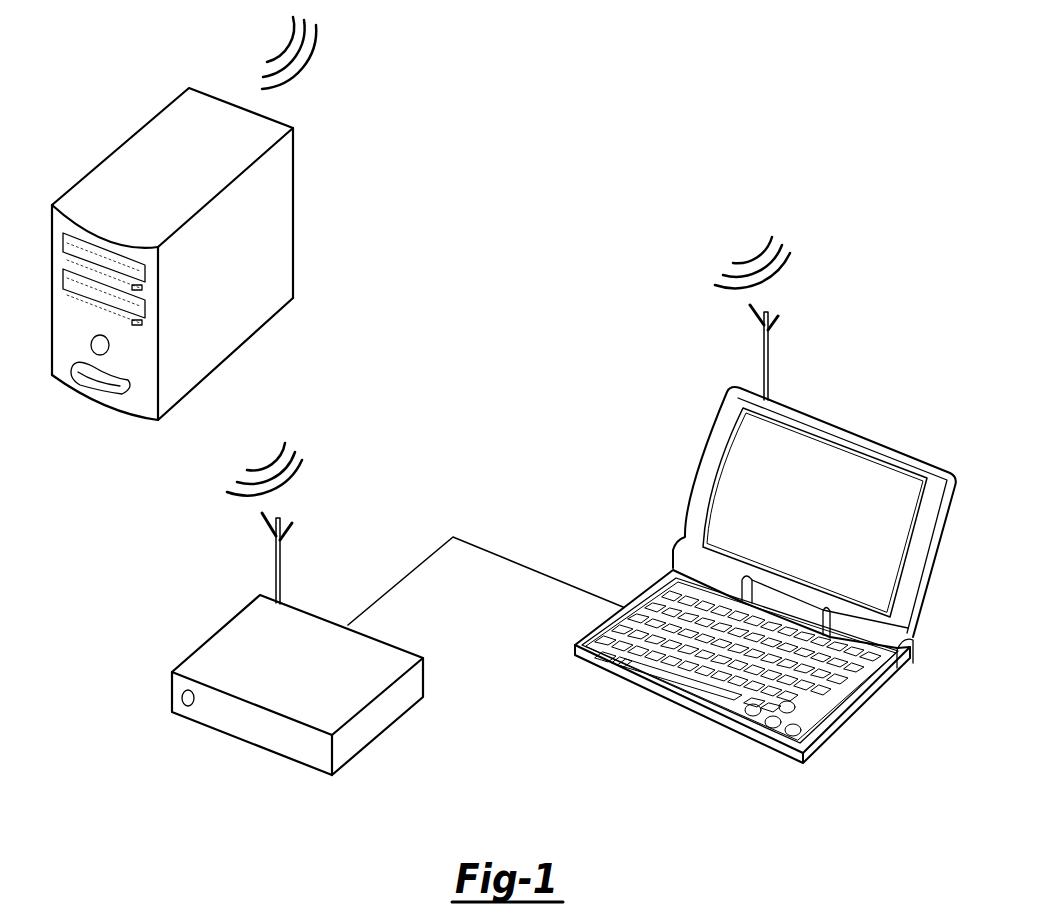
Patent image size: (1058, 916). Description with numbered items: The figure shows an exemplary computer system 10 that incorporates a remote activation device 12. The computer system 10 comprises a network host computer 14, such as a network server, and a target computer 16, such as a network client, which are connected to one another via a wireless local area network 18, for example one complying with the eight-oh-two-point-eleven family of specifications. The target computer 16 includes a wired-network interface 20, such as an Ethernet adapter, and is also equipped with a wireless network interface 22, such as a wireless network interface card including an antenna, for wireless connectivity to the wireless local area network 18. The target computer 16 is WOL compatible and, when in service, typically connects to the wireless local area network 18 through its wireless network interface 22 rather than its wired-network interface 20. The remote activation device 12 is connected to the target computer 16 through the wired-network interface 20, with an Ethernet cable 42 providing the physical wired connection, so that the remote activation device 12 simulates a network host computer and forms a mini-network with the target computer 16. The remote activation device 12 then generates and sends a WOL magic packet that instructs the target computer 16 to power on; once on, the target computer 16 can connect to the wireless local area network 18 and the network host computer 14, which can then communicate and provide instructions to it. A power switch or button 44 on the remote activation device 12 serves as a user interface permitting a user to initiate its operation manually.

The computer system 10 is at (528, 158).
The remote activation device 12 is at (240, 752).
The network host computer 14 is at (127, 140).
The target computer 16 is at (833, 737).
The wireless local area network 18 is at (318, 78).
The wired-network interface 20 is at (627, 603).
The wireless network interface 22 is at (787, 353).
The Ethernet cable 42 is at (400, 582).
The power switch or button 44 is at (183, 698).